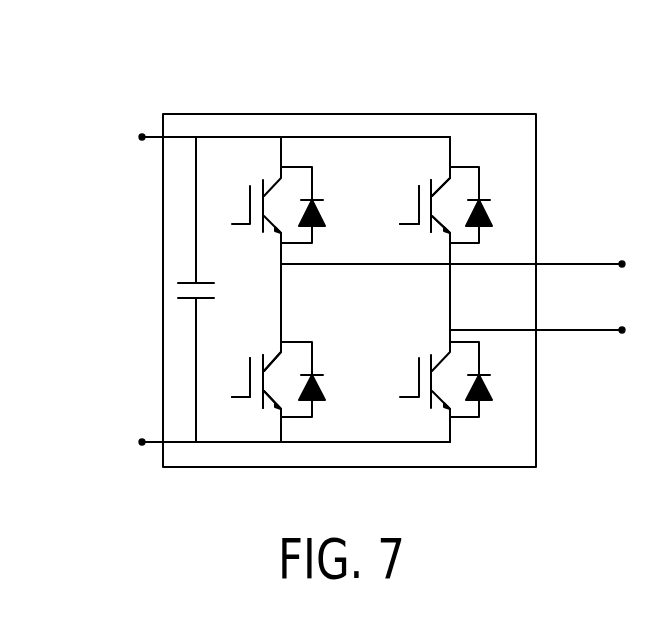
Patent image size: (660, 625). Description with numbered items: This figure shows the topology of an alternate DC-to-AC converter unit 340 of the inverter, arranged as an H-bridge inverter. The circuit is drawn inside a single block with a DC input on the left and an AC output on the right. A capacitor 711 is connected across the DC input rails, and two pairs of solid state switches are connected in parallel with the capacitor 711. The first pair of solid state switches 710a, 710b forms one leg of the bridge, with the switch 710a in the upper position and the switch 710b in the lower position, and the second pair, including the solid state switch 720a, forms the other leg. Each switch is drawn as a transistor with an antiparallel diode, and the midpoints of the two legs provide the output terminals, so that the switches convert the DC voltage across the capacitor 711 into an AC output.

The DC-to-AC converter unit 340 is at (263, 90).
The capacitor 711 is at (163, 250).
The solid state switch 710a is at (417, 215).
The solid state switch 710b is at (322, 382).
The solid state switch 720a is at (481, 196).